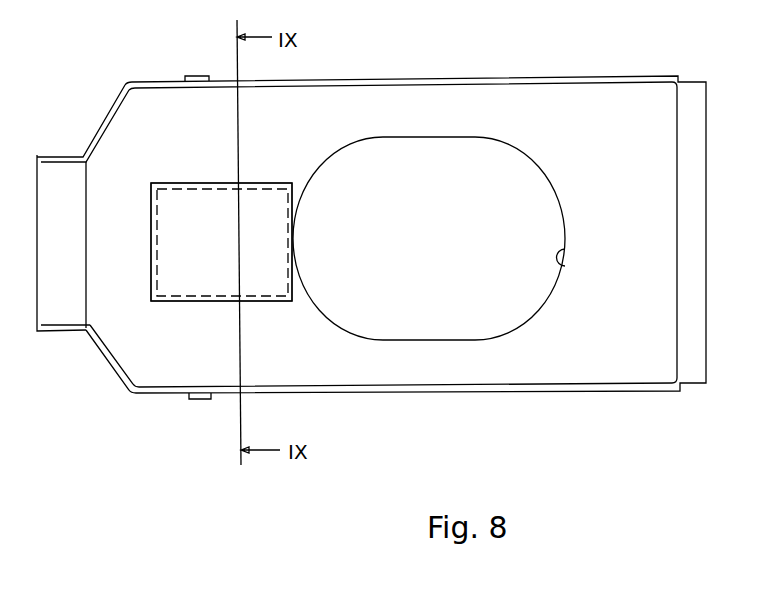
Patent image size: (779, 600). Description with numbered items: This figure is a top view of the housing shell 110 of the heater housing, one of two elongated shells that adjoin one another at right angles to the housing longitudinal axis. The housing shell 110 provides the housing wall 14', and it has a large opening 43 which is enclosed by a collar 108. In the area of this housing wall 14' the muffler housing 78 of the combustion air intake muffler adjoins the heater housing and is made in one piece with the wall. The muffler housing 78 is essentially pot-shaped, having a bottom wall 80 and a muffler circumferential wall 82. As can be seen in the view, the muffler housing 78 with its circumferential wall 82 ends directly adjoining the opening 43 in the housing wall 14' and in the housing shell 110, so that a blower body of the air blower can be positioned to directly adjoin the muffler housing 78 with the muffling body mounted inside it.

The housing wall 14' is at (381, 239).
The collar 108 is at (64, 208).
The housing shell 110 is at (478, 80).
The notch in aperture 43 is at (566, 267).
The muffler circumferential wall 82 is at (278, 182).
The muffler housing 78 is at (181, 304).
The bottom wall 80 is at (151, 232).